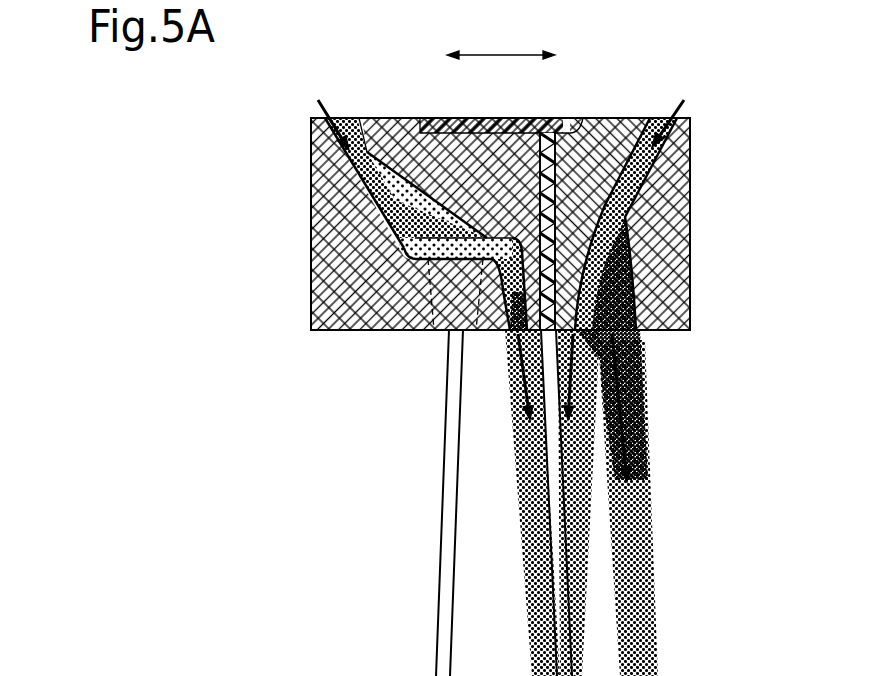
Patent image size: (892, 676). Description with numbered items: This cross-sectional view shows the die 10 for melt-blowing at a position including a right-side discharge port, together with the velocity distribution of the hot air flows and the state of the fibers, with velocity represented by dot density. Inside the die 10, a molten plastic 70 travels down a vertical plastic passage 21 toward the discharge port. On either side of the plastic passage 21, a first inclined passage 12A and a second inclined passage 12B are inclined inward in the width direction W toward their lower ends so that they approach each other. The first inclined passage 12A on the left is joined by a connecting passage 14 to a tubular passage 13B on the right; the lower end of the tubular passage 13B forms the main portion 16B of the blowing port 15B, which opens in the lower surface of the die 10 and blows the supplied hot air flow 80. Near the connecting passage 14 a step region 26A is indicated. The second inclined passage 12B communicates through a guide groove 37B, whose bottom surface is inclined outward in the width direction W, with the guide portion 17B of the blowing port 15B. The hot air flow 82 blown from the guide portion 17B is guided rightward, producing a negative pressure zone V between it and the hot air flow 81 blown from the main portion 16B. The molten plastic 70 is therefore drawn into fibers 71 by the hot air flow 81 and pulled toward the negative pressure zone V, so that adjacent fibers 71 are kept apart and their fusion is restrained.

The die 10 is at (706, 157).
The first inclined passage 12A is at (363, 192).
The second inclined passage 12B is at (641, 182).
The step portion 26A is at (435, 206).
The connecting passage 14 is at (402, 262).
The tubular passage 13B is at (432, 331).
The blowing port 15B is at (550, 323).
The main portion 16B is at (517, 334).
The guide portion 17B is at (640, 334).
The molten plastic 70 is at (521, 128).
The plastic passage 21 is at (552, 137).
The guide groove 37B is at (629, 290).
The hot air flow 80 is at (322, 102).
The hot air flow 81 is at (575, 392).
The hot air flow 82 is at (622, 398).
The spun fibers 71 is at (440, 598).
The negative pressure zone V is at (592, 483).
The width direction W is at (501, 44).